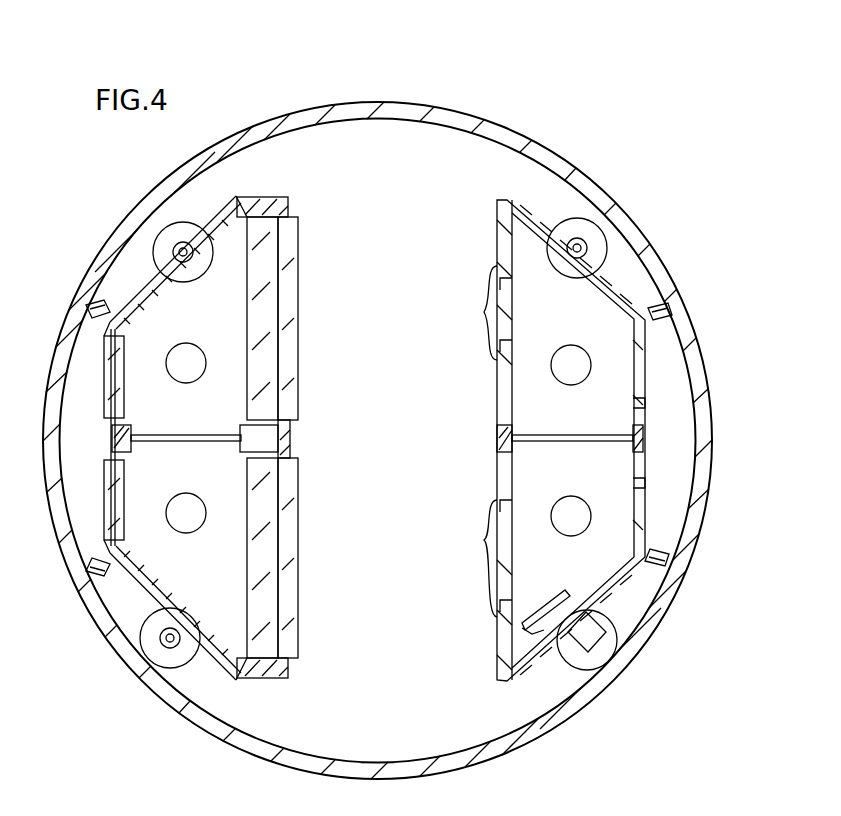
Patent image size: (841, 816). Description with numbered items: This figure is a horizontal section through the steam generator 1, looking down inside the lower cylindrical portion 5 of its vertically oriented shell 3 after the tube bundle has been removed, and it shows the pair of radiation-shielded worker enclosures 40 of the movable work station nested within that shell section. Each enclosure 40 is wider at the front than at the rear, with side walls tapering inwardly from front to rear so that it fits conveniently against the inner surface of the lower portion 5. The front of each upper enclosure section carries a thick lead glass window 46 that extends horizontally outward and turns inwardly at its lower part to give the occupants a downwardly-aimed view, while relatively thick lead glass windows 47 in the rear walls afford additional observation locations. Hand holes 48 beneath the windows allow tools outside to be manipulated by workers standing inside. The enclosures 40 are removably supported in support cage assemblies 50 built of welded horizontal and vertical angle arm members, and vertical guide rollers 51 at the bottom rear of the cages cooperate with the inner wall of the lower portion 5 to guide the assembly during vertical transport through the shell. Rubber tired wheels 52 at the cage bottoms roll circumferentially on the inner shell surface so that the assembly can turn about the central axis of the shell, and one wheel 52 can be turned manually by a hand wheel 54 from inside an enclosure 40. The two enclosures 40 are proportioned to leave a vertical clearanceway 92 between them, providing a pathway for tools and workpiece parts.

The steam generator 1 is at (413, 105).
The shell 3 is at (632, 225).
The lower cylindrical portion 5 is at (528, 152).
The radiation-shielded worker enclosure 40 is at (188, 323).
The lead glass window 46 is at (296, 386).
The lead glass window 47 is at (106, 386).
The hand hole 48 is at (660, 475).
The support cage assembly 50 is at (290, 200).
The vertical guide roller 51 is at (90, 308).
The rubber tired wheel 52 is at (179, 242).
The hand wheel 54 is at (560, 600).
The vertical clearanceway 92 is at (373, 479).